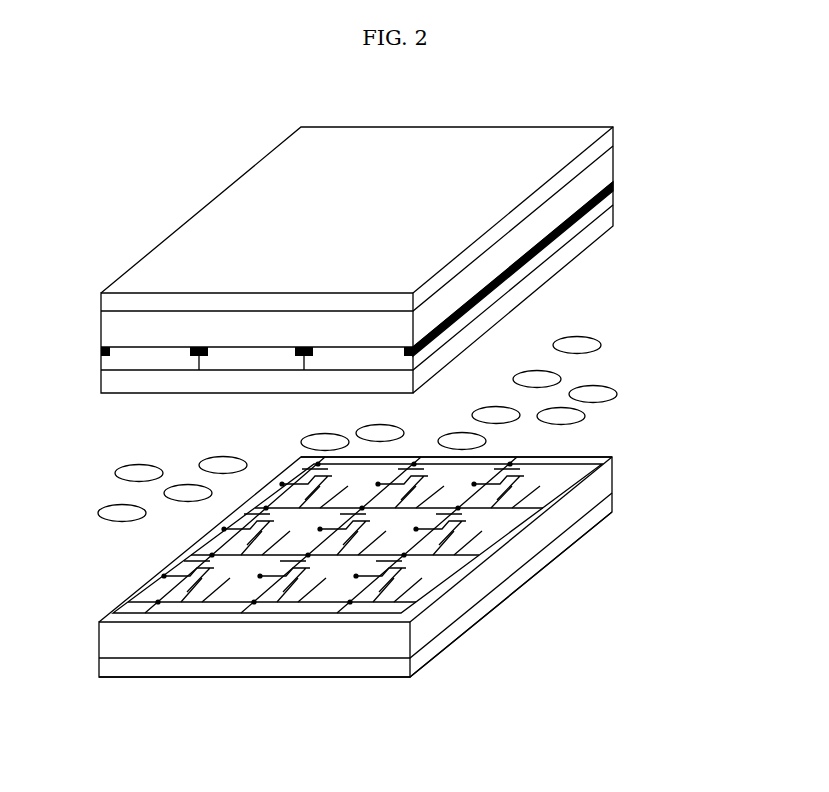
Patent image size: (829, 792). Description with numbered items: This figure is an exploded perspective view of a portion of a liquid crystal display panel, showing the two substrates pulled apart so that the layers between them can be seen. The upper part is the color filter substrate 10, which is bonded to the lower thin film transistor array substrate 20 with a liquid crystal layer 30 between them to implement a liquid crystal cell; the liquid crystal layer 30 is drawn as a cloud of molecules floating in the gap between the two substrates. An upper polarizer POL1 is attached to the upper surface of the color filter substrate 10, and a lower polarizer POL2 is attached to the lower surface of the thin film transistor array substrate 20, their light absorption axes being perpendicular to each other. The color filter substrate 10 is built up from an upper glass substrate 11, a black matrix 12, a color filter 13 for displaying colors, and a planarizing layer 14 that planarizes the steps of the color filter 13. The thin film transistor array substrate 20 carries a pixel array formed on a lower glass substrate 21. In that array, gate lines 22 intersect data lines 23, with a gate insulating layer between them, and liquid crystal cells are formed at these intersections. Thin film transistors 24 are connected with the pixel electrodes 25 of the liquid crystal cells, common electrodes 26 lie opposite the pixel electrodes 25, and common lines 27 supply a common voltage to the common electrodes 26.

The color filter substrate 10 is at (676, 99).
The upper polarizer POL1 is at (611, 141).
The upper glass substrate 11 is at (611, 171).
The black matrix 12 is at (100, 351).
The color filter 13 is at (611, 199).
The planarizing layer 14 is at (611, 224).
The liquid crystal layer 30 is at (592, 345).
The thin film transistor array substrate 20 is at (684, 456).
The gate lines 22 is at (576, 458).
The lower glass substrate 21 is at (600, 490).
The lower polarizer POL2 is at (608, 507).
The data lines 23 is at (148, 601).
The thin film transistors 24 is at (285, 583).
The pixel electrodes 25 is at (202, 583).
The common electrodes 26 is at (410, 592).
The common lines 27 is at (520, 508).